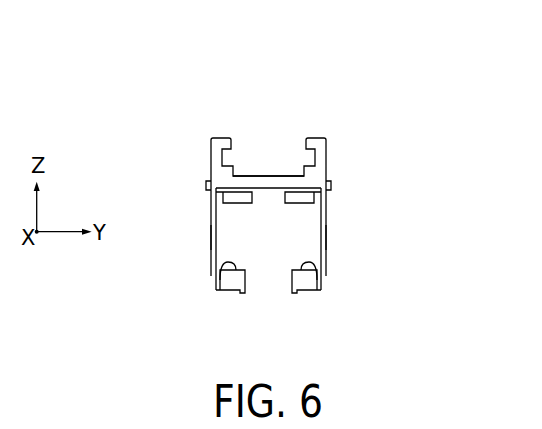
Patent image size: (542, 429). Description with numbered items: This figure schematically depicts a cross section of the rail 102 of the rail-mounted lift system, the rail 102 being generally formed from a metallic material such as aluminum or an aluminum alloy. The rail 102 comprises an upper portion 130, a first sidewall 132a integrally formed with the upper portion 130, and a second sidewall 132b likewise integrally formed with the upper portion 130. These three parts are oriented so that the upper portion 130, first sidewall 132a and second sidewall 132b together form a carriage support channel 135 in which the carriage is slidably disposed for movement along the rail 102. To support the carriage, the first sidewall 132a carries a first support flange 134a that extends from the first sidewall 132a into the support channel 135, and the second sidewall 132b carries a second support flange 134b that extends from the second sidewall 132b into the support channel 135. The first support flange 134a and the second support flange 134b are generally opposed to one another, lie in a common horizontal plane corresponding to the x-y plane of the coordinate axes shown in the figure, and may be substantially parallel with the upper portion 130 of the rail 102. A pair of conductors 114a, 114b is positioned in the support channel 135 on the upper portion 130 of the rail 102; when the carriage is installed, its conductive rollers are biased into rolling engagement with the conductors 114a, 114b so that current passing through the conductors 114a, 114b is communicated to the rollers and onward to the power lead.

The rail 102 is at (343, 128).
The upper portion 130 is at (259, 192).
The conductor 114a is at (226, 197).
The conductor 114b is at (311, 197).
The first sidewall 132a is at (212, 229).
The second sidewall 132b is at (325, 229).
The first support flange 134a is at (211, 276).
The second support flange 134b is at (326, 276).
The carriage support channel 135 is at (271, 266).